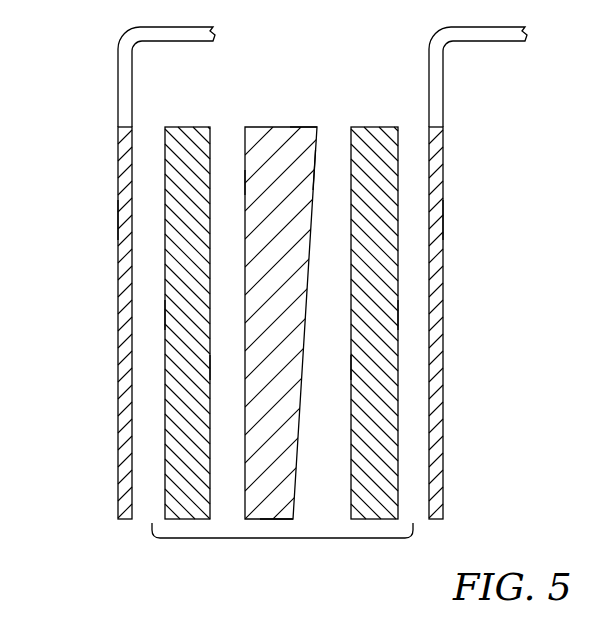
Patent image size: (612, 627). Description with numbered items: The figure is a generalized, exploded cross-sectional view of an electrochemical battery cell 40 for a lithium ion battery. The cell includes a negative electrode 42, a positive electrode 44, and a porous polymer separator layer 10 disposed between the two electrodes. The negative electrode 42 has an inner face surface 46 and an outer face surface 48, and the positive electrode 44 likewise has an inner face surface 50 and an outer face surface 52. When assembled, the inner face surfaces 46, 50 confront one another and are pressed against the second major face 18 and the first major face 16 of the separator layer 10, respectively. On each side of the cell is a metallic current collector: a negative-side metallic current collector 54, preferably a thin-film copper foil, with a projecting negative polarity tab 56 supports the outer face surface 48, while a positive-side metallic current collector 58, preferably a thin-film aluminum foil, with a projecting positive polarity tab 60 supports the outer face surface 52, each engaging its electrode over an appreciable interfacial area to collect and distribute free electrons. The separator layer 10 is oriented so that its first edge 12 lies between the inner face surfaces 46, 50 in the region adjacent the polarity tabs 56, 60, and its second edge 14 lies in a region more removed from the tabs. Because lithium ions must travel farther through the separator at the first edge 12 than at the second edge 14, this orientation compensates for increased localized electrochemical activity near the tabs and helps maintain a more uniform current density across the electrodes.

The porous polymer separator layer 10 is at (282, 114).
The first edge 12 is at (302, 127).
The second edge 14 is at (281, 519).
The first major face 16 is at (314, 175).
The second major face 18 is at (245, 183).
The electrochemical battery cell 40 is at (252, 538).
The negative electrode 42 is at (188, 137).
The positive electrode 44 is at (377, 140).
The inner face surface 46 is at (211, 361).
The outer face surface 48 is at (165, 315).
The inner face surface 50 is at (351, 361).
The outer face surface 52 is at (398, 312).
The negative-side metallic current collector 54 is at (118, 215).
The negative polarity tab 56 is at (118, 88).
The positive-side metallic current collector 58 is at (443, 215).
The positive polarity tab 60 is at (443, 90).